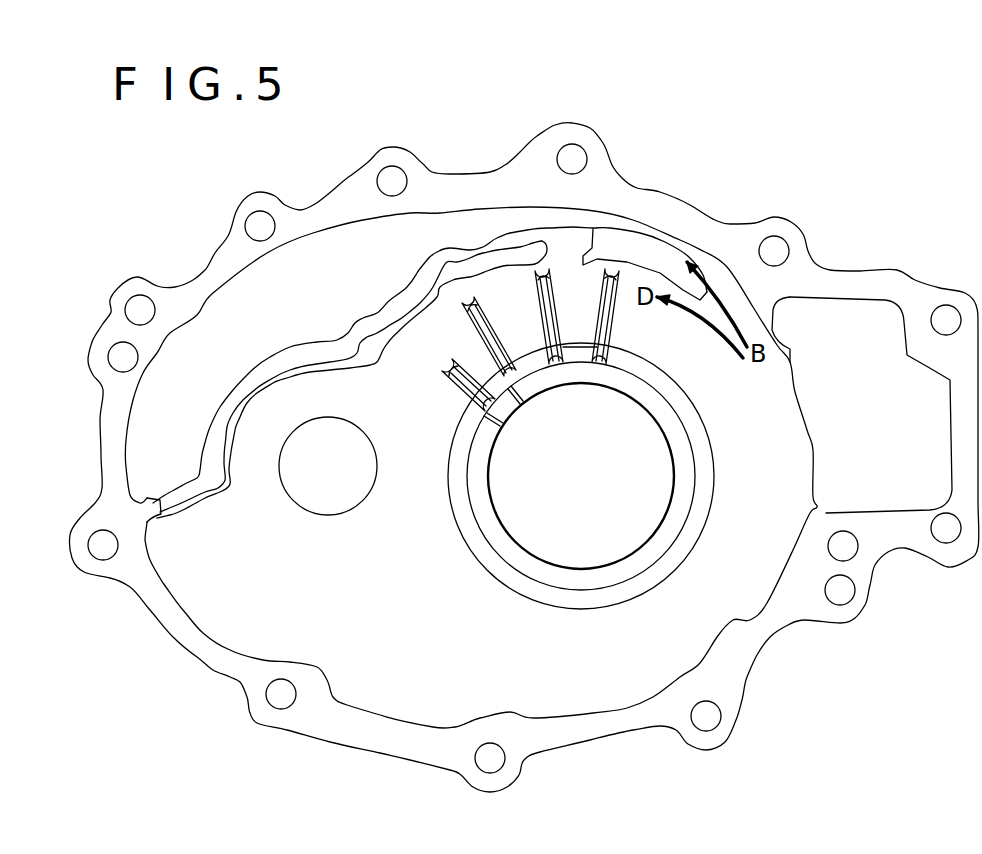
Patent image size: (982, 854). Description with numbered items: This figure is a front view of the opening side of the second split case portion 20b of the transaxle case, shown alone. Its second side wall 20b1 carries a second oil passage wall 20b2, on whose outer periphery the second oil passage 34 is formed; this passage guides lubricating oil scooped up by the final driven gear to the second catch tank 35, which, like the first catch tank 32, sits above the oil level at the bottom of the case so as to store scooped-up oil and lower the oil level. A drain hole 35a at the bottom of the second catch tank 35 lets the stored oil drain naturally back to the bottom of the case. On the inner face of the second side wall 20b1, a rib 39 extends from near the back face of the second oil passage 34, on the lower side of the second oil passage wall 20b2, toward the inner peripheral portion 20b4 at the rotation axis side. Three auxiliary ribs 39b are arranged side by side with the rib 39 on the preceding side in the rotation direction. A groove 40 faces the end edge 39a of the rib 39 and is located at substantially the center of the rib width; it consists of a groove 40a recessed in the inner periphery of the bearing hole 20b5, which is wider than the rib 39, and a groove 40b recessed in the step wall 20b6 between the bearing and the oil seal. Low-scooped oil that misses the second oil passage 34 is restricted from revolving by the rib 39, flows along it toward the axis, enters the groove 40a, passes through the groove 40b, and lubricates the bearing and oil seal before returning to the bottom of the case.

The second split case portion 20b is at (723, 200).
The second side wall 20b1 is at (223, 580).
The second oil passage wall 20b2 is at (427, 297).
The inner peripheral portion 20b4 is at (718, 452).
The bearing hole 20b5 is at (690, 527).
The step wall 20b6 is at (627, 566).
The first catch tank 32 is at (863, 477).
The second oil passage 34 is at (450, 233).
The second catch tank 35 is at (220, 333).
The drain hole 35a is at (160, 508).
The rib 39 is at (482, 456).
The end edge 39a is at (440, 405).
The auxiliary ribs 39b is at (543, 273).
The groove 40 is at (502, 597).
The groove 40a is at (462, 400).
The groove 40b is at (499, 418).